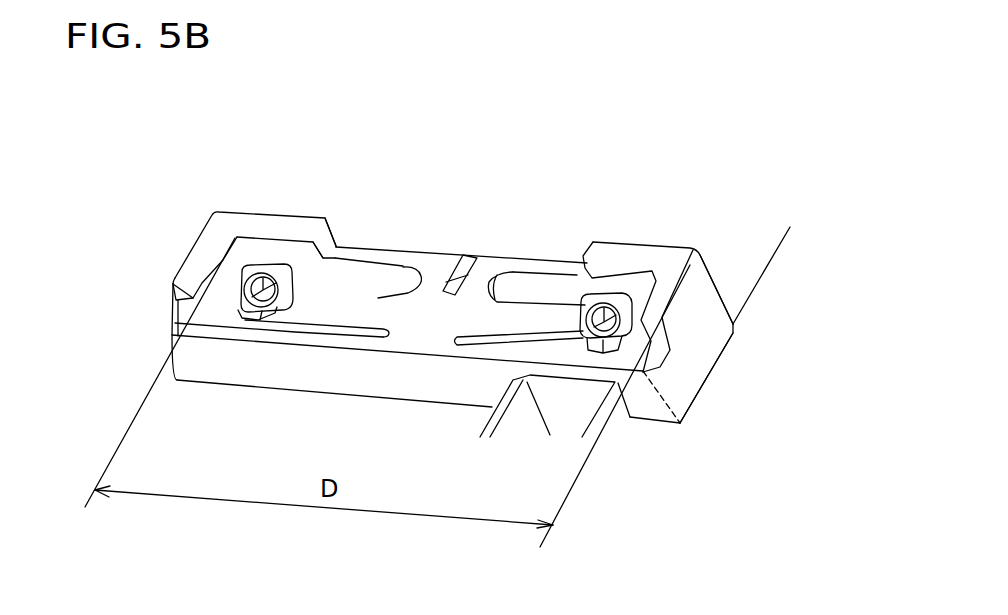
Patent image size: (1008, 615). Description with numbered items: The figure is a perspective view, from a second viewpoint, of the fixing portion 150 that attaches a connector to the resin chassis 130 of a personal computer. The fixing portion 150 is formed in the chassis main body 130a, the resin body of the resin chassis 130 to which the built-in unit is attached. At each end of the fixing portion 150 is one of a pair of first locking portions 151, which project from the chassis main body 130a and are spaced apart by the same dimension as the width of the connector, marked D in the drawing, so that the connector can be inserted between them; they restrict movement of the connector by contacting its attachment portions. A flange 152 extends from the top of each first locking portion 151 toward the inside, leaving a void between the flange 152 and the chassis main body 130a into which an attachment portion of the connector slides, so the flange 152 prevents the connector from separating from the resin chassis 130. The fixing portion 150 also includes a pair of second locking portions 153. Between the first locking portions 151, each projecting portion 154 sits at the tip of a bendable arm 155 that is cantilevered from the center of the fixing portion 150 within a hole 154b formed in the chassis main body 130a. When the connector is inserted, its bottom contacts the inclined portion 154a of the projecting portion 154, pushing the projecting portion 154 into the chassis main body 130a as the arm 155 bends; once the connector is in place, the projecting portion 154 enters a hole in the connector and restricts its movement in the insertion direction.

The resin chassis 130 is at (736, 236).
The chassis main body 130a is at (728, 253).
The fixing portion 150 is at (154, 249).
The first locking portion 151 is at (188, 308).
The flange 152 is at (185, 258).
The second locking portion 153 is at (333, 257).
The projecting portion 154 is at (282, 268).
The inclined portion 154a is at (583, 325).
The hole 154b is at (370, 266).
The arm 155 is at (540, 307).